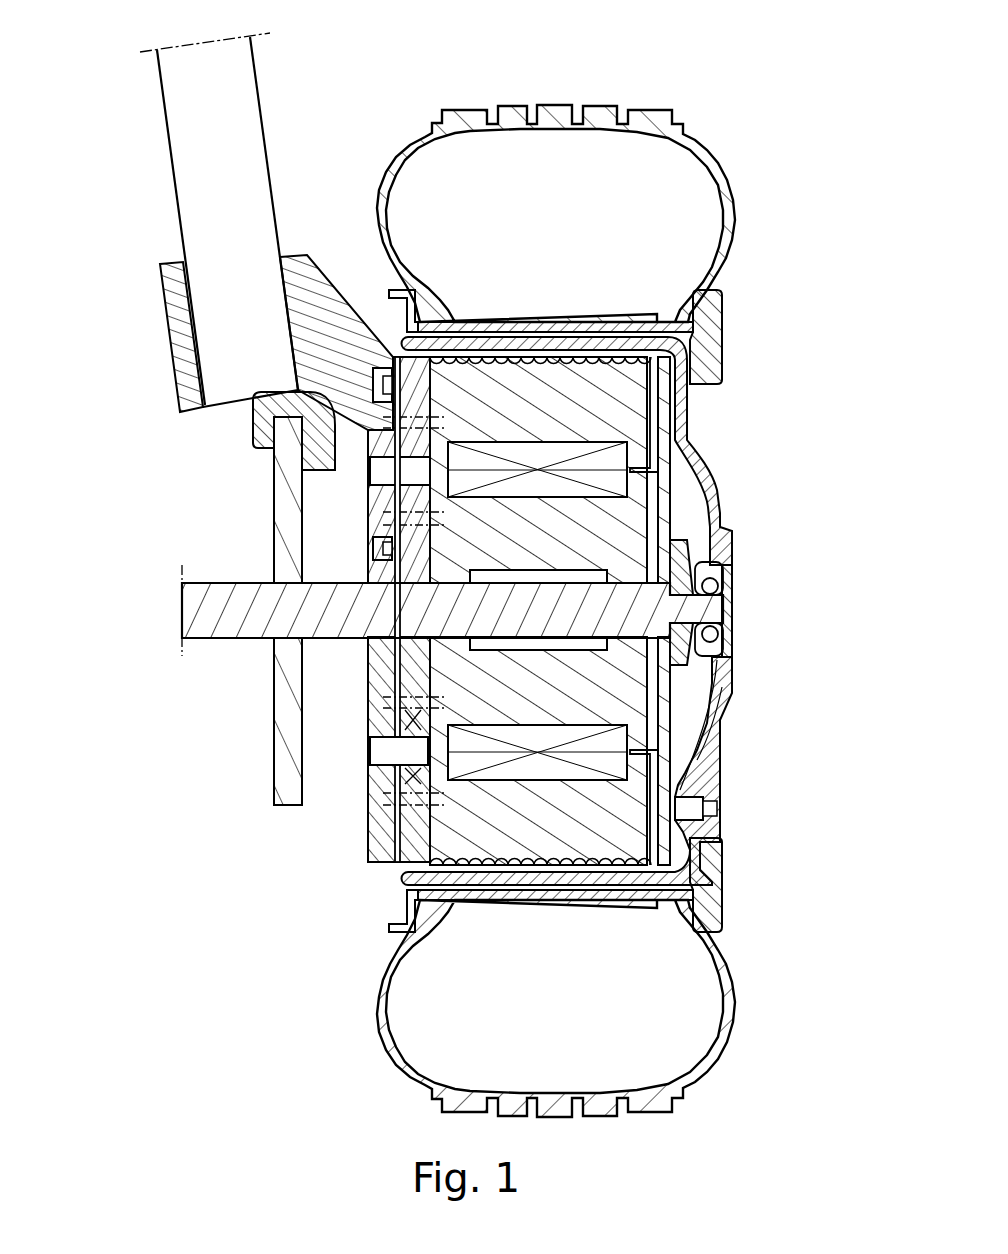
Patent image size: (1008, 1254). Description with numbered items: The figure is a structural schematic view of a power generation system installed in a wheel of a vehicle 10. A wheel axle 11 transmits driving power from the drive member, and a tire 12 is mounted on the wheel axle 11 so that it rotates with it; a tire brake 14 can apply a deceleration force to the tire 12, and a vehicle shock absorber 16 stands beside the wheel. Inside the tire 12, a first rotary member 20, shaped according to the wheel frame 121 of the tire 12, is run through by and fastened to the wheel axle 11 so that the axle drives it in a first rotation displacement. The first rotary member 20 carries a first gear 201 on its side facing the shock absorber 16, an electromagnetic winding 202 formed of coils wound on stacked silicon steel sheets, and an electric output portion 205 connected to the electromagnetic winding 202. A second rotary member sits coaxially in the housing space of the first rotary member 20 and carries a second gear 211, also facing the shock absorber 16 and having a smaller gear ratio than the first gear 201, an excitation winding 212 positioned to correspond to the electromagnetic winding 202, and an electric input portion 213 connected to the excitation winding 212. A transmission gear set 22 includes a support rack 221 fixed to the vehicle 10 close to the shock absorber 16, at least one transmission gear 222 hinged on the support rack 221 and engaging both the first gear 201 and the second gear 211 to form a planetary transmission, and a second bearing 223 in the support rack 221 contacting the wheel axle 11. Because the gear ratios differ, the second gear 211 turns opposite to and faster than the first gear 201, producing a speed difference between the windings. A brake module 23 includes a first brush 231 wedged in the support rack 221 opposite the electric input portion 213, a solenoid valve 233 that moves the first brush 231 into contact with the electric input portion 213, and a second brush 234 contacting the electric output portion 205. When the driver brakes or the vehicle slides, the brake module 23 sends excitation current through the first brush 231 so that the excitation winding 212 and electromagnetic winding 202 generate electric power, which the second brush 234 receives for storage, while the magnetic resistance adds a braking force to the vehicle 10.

The vehicle 10 is at (826, 63).
The wheel axle 11 is at (658, 612).
The tire 12 is at (748, 245).
The wheel frame 121 is at (708, 322).
The tire brake 14 is at (326, 460).
The vehicle shock absorber 16 is at (240, 102).
The first rotary member 20 is at (400, 884).
The first gear 201 is at (371, 813).
The electromagnetic winding 202 is at (703, 812).
The electric output portion 205 is at (417, 398).
The second gear 211 is at (392, 703).
The excitation winding 212 is at (402, 737).
The electric input portion 213 is at (400, 543).
The transmission gear set 22 is at (195, 657).
The support rack 221 is at (372, 708).
The transmission gear 222 is at (372, 740).
The second bearing 223 is at (372, 652).
The brake module 23 is at (104, 366).
The first brush 231 is at (370, 546).
The solenoid valve 233 is at (372, 378).
The second brush 234 is at (368, 402).